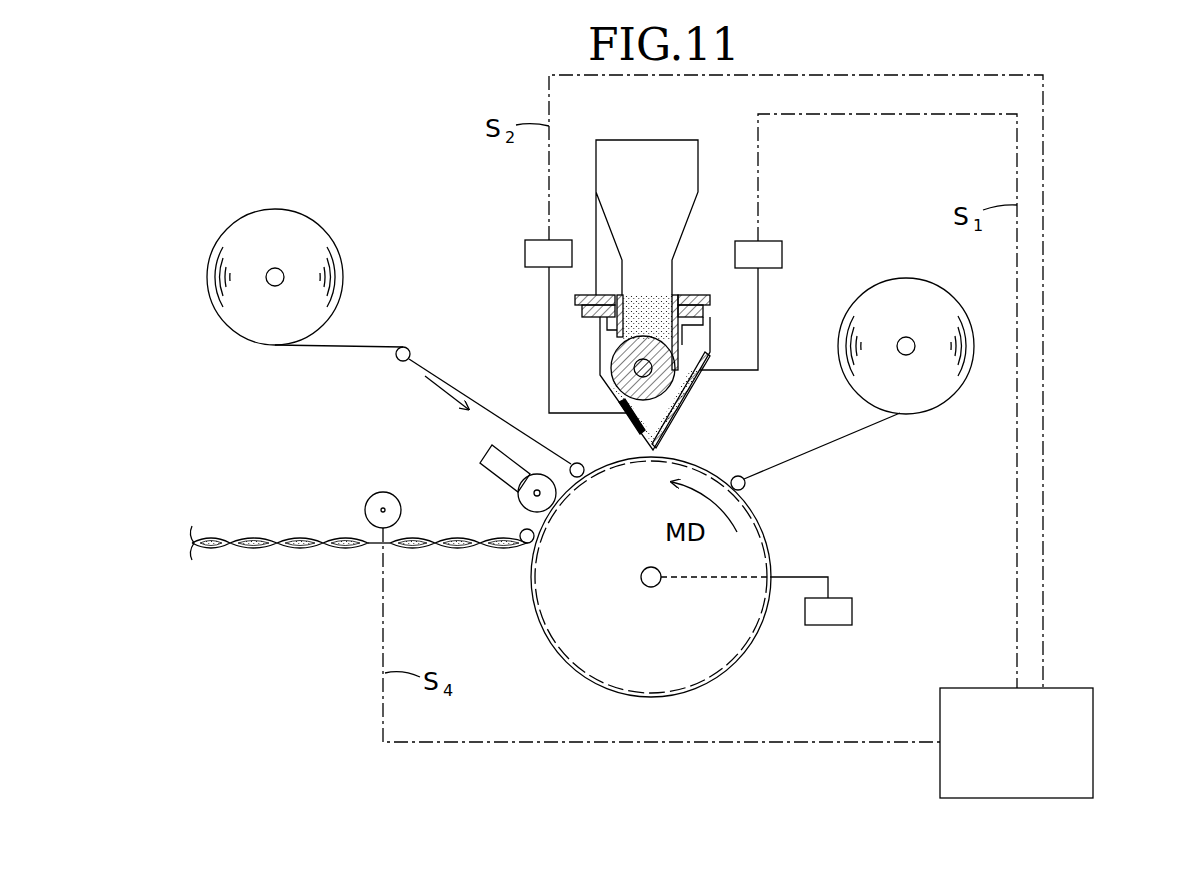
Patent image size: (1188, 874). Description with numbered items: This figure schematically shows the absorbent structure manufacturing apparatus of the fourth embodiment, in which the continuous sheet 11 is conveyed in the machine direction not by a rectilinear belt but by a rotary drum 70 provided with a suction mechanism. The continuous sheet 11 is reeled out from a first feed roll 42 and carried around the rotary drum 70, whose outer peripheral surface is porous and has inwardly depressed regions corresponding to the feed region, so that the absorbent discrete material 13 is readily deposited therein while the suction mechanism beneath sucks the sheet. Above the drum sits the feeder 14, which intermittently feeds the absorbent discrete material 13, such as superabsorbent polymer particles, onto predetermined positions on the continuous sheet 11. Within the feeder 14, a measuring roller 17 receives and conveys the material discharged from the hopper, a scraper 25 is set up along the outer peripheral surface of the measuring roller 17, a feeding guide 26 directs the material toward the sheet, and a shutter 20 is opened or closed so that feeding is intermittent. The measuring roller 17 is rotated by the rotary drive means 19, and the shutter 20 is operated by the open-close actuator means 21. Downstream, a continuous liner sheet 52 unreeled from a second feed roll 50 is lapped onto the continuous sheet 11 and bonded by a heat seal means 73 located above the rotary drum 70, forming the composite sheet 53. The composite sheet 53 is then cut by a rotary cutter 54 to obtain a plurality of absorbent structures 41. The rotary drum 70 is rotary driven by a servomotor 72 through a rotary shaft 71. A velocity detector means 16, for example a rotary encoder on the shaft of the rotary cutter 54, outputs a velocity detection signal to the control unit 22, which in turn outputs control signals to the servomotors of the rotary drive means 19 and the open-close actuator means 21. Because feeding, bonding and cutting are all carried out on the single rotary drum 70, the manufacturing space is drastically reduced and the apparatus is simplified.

The continuous sheet 11 is at (822, 456).
The absorbent discrete material 13 is at (608, 467).
The feeder 14 is at (708, 170).
The velocity detector means 16 is at (378, 509).
The measuring roller 17 is at (665, 381).
The rotary drive means 19 is at (785, 254).
The shutter 20 is at (632, 421).
The open-close actuator means 21 is at (525, 252).
The control unit 22 is at (1083, 745).
The scraper 25 is at (703, 360).
The feeding guide 26 is at (670, 421).
The absorbent structure 41 is at (455, 551).
The first feed roll 42 is at (893, 296).
The second feed roll 50 is at (281, 226).
The continuous liner sheet 52 is at (435, 360).
The composite sheet 53 is at (568, 488).
The rotary cutter 54 is at (377, 500).
The rotary drum 70 is at (745, 556).
The rotary shaft 71 is at (640, 577).
The servomotor 72 is at (842, 597).
The heat seal means 73 is at (490, 468).